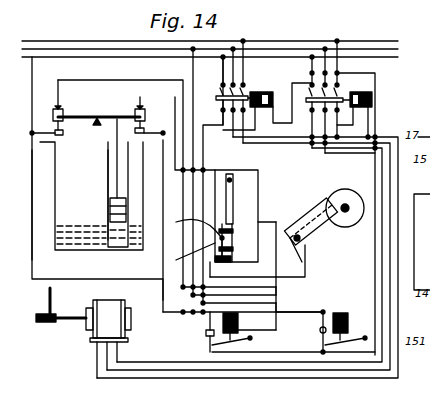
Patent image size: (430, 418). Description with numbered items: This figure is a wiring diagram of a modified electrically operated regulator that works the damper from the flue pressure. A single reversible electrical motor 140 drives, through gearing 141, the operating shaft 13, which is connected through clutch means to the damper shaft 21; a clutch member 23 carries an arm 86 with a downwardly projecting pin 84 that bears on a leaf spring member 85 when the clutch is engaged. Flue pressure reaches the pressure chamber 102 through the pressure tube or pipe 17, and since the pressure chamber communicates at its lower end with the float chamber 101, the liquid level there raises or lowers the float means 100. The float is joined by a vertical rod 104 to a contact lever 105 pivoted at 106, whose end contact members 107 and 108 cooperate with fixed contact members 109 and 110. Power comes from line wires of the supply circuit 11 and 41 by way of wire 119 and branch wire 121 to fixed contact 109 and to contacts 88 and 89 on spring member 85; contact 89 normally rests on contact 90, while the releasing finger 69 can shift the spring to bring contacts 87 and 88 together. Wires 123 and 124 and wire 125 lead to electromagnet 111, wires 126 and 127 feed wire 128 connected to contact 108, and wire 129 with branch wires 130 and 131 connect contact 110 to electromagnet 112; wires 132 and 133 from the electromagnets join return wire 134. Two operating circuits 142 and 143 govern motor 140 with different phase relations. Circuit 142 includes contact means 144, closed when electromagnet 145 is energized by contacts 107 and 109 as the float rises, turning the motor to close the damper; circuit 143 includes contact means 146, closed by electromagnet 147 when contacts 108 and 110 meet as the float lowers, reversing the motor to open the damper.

The electrical supply circuit 11 is at (291, 36).
The supply conductors 41 is at (289, 50).
The operating shaft 13 is at (53, 297).
The pressure tube or pipe 17 is at (46, 145).
The damper shaft 21 is at (345, 212).
The clutch member 23 is at (350, 196).
The releasing finger 69 is at (233, 201).
The downwardly projecting pin 84 is at (291, 248).
The leaf spring member 85 is at (222, 228).
The arm 86 is at (309, 218).
The insulated contact 87 is at (189, 230).
The insulated contact 88 is at (189, 255).
The insulated contact 89 is at (233, 249).
The insulated contact 90 is at (233, 231).
The float means 100 is at (110, 200).
The float chamber 101 is at (108, 220).
The pressure chamber 102 is at (99, 194).
The vertical rod 104 is at (108, 156).
The contact lever 105 is at (96, 106).
The pivot 106 is at (100, 124).
The contact member 107 is at (84, 105).
The contact member 108 is at (135, 110).
The fixed contact member 109 is at (63, 133).
The fixed contact member 110 is at (145, 132).
The electromagnet 111 is at (348, 322).
The electromagnet 112 is at (238, 322).
The wire 119 is at (33, 70).
The branch wire 121 is at (32, 225).
The wire 123 is at (301, 262).
The wire 124 is at (233, 261).
The wire 125 is at (311, 311).
The wire 126 is at (266, 222).
The wire 127 is at (230, 278).
The wire 128 is at (258, 177).
The wire 129 is at (165, 221).
The branch wire 130 is at (277, 288).
The branch wire 131 is at (196, 314).
The wire 132 is at (297, 334).
The wire 133 is at (262, 334).
The return wire 134 is at (277, 312).
The electrical motor 140 is at (127, 306).
The gearing 141 is at (45, 326).
The operating circuit 142 is at (296, 138).
The operating circuit 143 is at (258, 137).
The contact means 144 is at (337, 99).
The electromagnet 145 is at (374, 100).
The contact means 146 is at (218, 98).
The electromagnet 147 is at (257, 91).